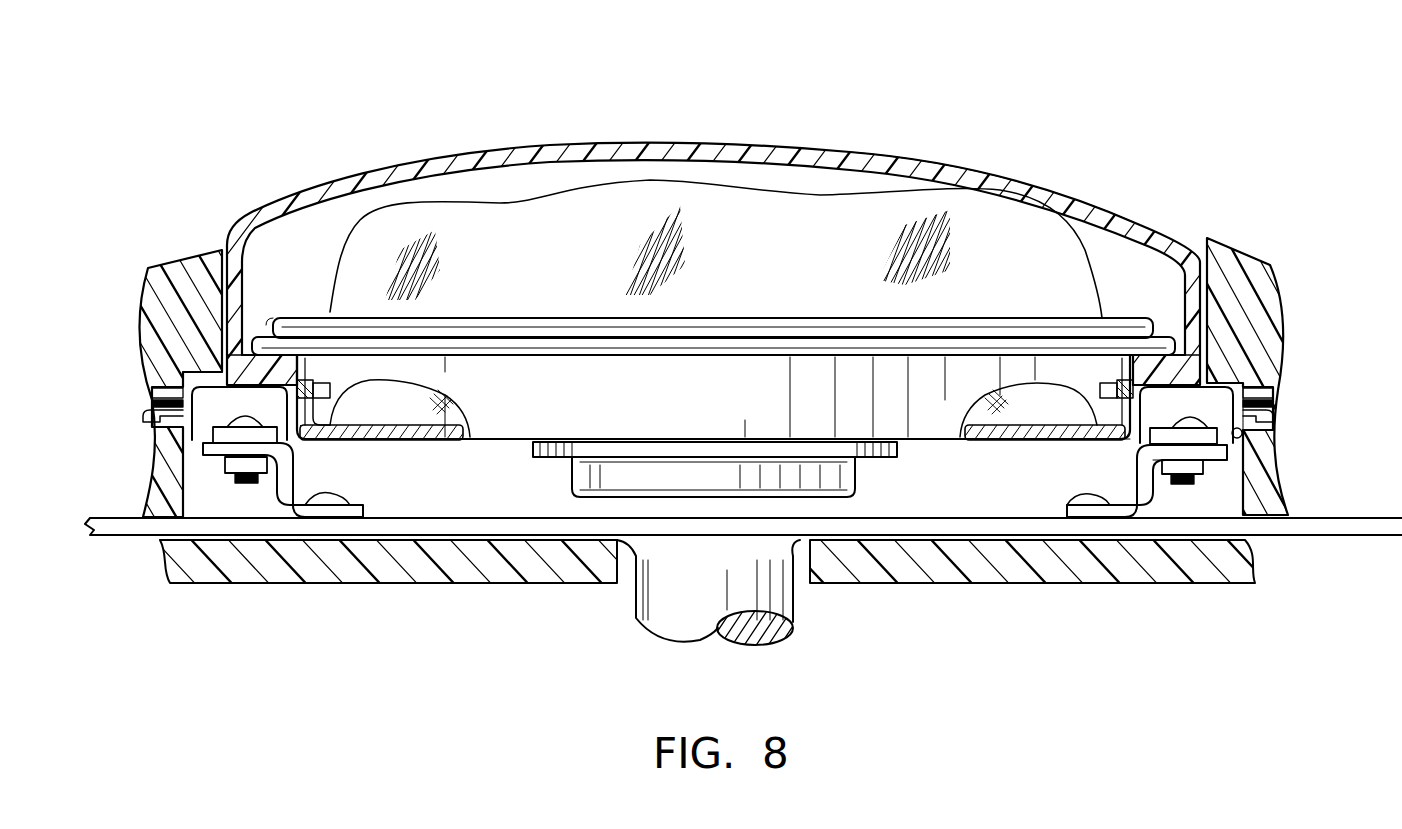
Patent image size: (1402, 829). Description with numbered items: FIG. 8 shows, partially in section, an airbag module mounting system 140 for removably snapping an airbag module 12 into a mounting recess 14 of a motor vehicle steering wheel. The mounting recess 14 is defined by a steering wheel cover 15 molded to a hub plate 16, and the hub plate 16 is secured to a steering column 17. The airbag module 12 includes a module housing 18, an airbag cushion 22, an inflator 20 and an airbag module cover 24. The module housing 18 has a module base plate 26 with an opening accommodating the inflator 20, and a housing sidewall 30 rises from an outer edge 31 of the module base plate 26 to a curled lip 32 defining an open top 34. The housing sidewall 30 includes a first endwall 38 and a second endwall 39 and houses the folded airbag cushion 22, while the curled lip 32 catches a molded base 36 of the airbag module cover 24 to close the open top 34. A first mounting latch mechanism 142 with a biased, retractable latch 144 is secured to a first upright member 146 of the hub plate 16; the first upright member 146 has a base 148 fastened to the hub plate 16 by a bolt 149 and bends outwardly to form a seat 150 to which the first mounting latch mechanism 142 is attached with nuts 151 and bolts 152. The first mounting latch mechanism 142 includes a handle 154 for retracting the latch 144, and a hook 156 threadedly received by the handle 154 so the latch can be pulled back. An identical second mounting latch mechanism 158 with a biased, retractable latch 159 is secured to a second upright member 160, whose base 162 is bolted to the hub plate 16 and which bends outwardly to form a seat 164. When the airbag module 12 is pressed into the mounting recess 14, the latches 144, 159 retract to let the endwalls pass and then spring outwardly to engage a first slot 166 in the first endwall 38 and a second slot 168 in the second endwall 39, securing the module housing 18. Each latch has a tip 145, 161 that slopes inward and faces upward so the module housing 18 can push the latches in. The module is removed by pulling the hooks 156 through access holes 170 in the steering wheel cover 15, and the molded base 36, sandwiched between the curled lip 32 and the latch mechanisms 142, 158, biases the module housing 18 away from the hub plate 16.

The airbag module 12 is at (525, 140).
The mounting recess 14 is at (1200, 245).
The steering wheel cover 15 is at (1085, 585).
The hub plate 16 is at (1335, 536).
The steering column 17 is at (795, 600).
The module housing 18 is at (446, 312).
The inflator 20 is at (855, 485).
The airbag cushion 22 is at (815, 192).
The airbag module cover 24 is at (880, 158).
The module base plate 26 is at (460, 428).
The housing sidewall 30 is at (762, 398).
The outer edge 31 is at (380, 441).
The curled lip 32 is at (595, 357).
The open top 34 is at (318, 318).
The molded base 36 is at (150, 300).
The first endwall 38 is at (1118, 385).
The second endwall 39 is at (313, 385).
The airbag module mounting system 140 is at (1023, 96).
The first mounting latch mechanism 142 is at (1255, 380).
The biased, retractable latch 144 is at (1128, 430).
The tip 145 is at (1122, 442).
The first upright member 146 is at (1145, 498).
The base 148 is at (1070, 508).
The bolt 149 is at (332, 495).
The seat 150 is at (1245, 436).
The nuts 151 is at (228, 466).
The bolts 152 is at (712, 415).
The handle 154 is at (170, 392).
The hook 156 is at (152, 403).
The second mounting latch mechanism 158 is at (175, 358).
The biased, retractable latch 159 is at (306, 422).
The second upright member 160 is at (292, 503).
The tip 161 is at (345, 395).
The base 162 is at (360, 510).
The seat 164 is at (213, 433).
The first slot 166 is at (982, 404).
The second slot 168 is at (332, 390).
The access holes 170 is at (150, 416).